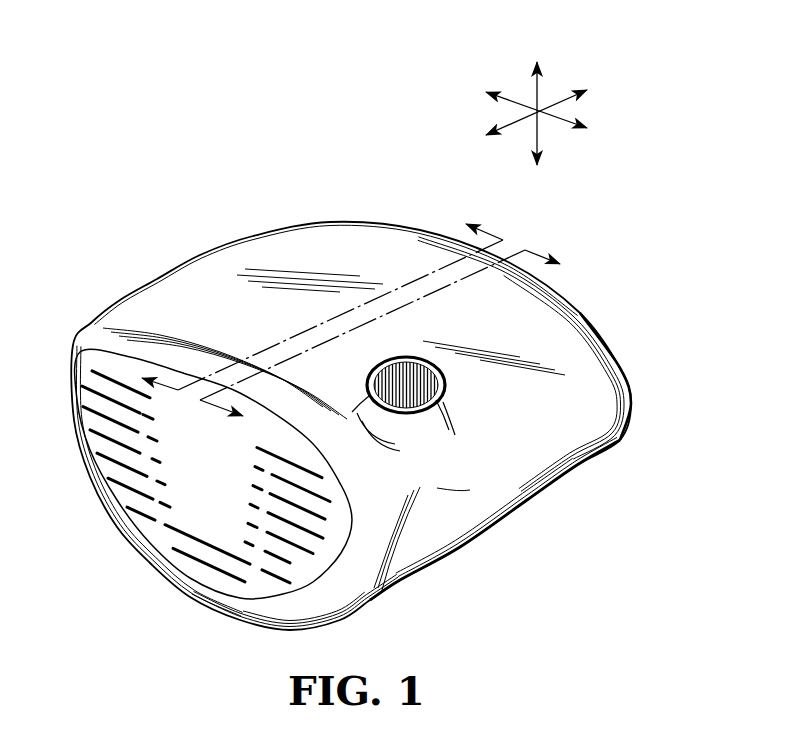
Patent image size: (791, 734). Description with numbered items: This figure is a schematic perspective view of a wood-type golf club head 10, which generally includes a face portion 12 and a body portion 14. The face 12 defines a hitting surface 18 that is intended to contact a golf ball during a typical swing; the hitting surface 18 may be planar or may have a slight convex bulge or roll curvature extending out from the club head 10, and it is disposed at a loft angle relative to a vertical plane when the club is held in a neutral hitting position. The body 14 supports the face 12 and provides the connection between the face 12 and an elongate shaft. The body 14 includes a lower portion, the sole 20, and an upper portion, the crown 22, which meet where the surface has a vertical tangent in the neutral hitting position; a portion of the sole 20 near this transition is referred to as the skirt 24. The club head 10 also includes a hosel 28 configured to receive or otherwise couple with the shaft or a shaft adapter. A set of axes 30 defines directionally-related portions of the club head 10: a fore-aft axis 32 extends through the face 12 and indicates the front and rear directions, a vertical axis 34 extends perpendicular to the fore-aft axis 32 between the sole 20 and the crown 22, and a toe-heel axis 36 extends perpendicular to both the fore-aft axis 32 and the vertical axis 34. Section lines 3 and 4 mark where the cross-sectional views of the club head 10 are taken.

The golf club head 10 is at (124, 181).
The face portion 12 is at (205, 584).
The body portion 14 is at (560, 338).
The hitting surface 18 is at (187, 565).
The sole 20 is at (509, 529).
The crown 22 is at (256, 256).
The skirt 24 is at (639, 407).
The hosel 28 is at (455, 409).
The axes 30 is at (603, 84).
The fore-aft axis 32 is at (510, 123).
The vertical axis 34 is at (537, 78).
The toe-heel axis 36 is at (567, 117).
The section line 3- 3 is at (335, 321).
The section line 4- 4 is at (396, 351).